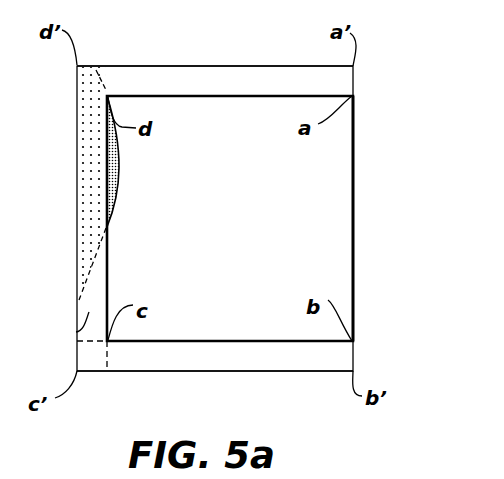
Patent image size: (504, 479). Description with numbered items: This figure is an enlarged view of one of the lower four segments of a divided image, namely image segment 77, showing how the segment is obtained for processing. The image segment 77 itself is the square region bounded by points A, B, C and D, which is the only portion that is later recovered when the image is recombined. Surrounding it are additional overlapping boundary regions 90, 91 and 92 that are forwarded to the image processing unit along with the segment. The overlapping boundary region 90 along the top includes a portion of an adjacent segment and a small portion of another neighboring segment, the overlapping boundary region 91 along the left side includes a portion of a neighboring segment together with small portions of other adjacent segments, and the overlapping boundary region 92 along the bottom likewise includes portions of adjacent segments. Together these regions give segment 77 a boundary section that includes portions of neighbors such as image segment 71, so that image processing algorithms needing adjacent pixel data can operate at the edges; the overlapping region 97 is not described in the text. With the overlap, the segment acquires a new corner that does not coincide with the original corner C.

The image segment 71 is at (101, 76).
The overlapping boundary region 90 is at (247, 82).
The overlapping boundary region 92 is at (198, 352).
The image segment 77 is at (355, 210).
The left dotted edge region 97 is at (88, 170).
The overlapping boundary region 91 is at (77, 329).